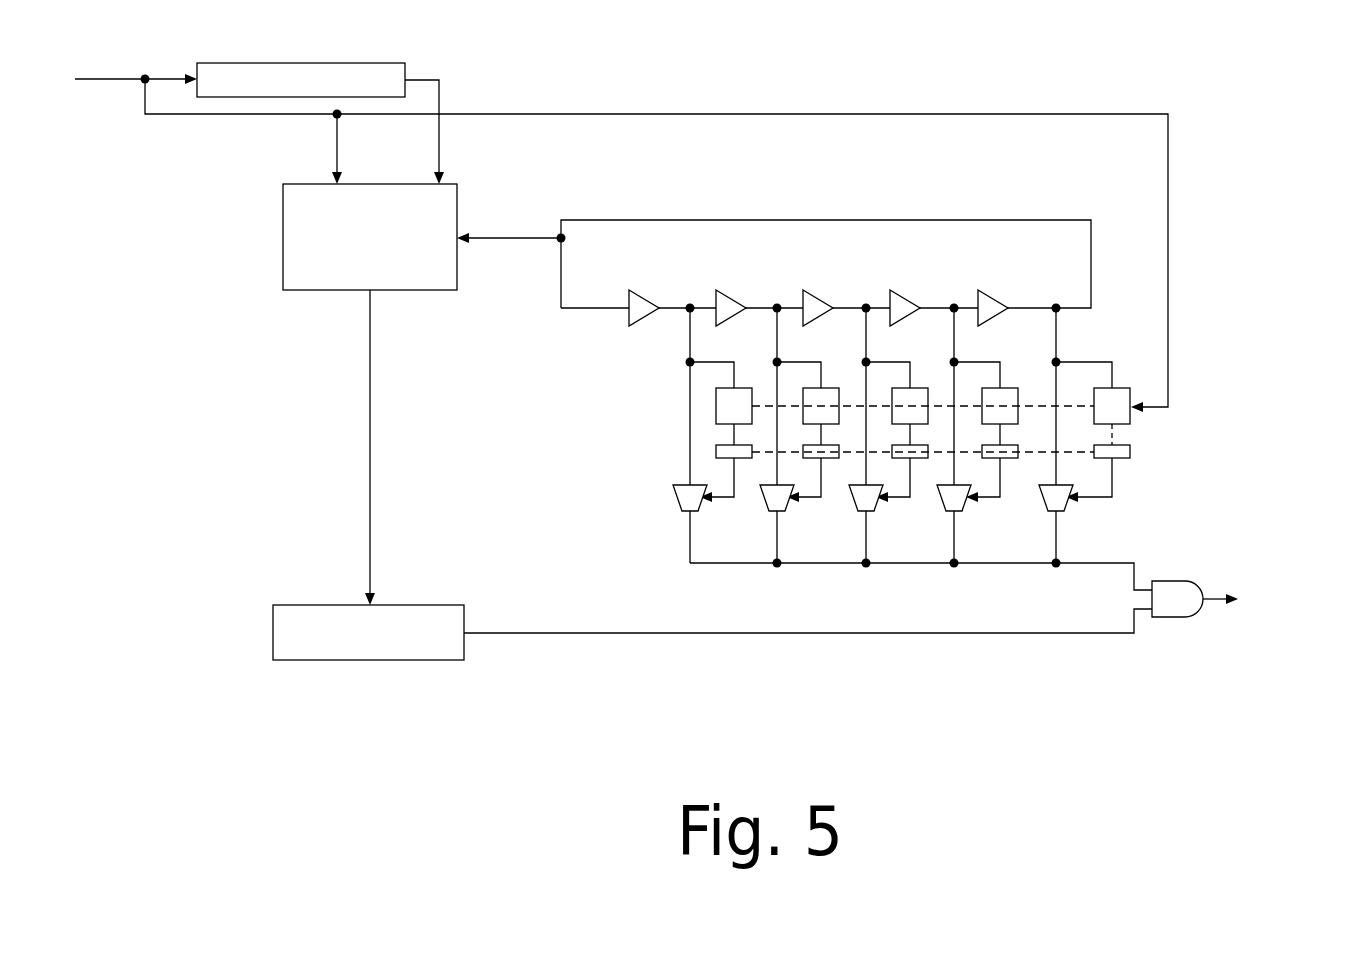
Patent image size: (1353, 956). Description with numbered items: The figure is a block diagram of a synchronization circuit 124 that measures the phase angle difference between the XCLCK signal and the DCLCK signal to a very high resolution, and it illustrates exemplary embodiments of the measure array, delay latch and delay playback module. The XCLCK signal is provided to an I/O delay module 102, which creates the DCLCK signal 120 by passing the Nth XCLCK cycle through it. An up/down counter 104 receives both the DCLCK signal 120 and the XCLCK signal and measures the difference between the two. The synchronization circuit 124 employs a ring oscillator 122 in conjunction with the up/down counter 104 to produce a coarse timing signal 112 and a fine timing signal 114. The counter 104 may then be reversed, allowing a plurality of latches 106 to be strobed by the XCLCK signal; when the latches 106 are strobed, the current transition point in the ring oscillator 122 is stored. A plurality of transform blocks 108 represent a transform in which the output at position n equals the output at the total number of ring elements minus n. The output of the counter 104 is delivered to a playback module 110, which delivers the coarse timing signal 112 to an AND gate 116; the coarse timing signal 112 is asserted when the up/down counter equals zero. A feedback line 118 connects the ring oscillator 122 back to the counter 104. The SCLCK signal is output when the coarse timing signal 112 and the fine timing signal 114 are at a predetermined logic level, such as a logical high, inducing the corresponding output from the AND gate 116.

The I/O delay module 102 is at (300, 63).
The up/down counter 104 is at (283, 235).
The latches 106 is at (1118, 390).
The transform blocks 108 is at (1130, 453).
The playback module 110 is at (273, 632).
The coarse timing signal 112 is at (1118, 635).
The fine timing signal 114 is at (1118, 563).
The AND gate 116 is at (1178, 618).
The counter feedback line 118 is at (500, 218).
The DCLCK signal 120 is at (448, 105).
The ring oscillator 122 is at (855, 220).
The synchronization circuit 124 is at (1235, 61).